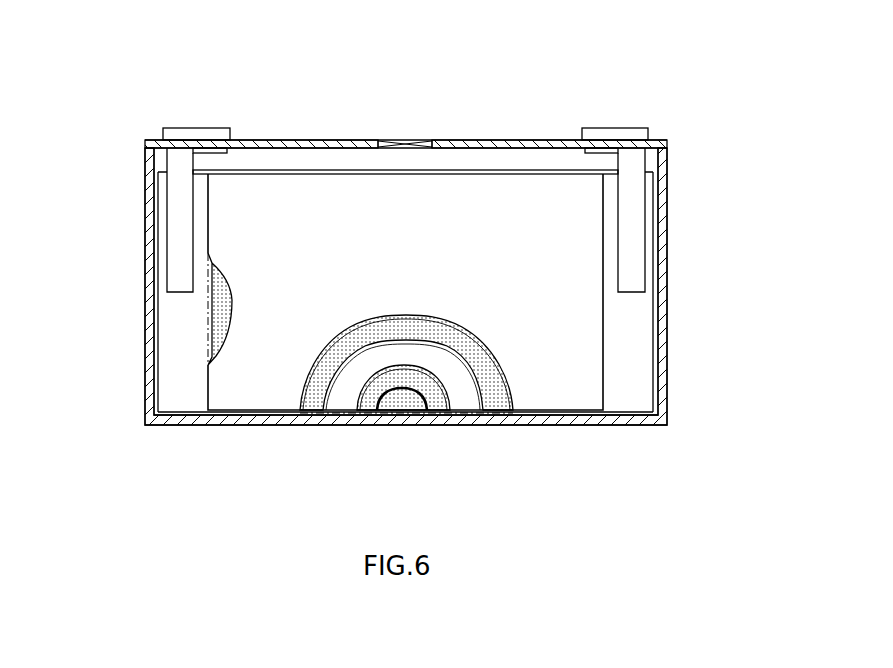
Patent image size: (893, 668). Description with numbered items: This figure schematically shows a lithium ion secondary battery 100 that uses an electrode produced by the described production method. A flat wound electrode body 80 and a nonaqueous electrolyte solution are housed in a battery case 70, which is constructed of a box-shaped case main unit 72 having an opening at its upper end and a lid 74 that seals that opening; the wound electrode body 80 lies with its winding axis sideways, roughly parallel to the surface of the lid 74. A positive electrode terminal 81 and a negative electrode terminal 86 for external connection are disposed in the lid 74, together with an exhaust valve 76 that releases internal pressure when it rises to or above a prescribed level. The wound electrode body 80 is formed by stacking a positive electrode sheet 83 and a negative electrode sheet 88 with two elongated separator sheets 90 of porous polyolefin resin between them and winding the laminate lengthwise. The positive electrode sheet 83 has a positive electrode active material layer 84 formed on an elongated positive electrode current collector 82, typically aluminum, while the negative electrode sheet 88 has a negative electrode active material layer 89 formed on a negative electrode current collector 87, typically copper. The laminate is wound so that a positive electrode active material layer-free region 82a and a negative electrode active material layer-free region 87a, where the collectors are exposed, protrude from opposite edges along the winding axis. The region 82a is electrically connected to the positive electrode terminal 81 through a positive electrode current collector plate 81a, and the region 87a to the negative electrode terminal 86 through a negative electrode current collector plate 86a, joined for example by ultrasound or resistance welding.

The lithium ion secondary battery 100 is at (683, 65).
The battery case 70 is at (668, 248).
The case main unit 72 is at (667, 158).
The lid 74 is at (495, 140).
The exhaust valve 76 is at (417, 140).
The wound electrode body 80 is at (330, 168).
The positive electrode terminal 81 is at (207, 128).
The positive electrode current collector plate 81a is at (178, 210).
The positive electrode current collector 82 is at (157, 315).
The positive electrode active material layer-free region 82a is at (170, 380).
The positive electrode sheet 83 is at (315, 403).
The positive electrode active material layer 84 is at (232, 287).
The negative electrode terminal 86 is at (627, 128).
The negative electrode current collector plate 86a is at (635, 205).
The negative electrode current collector 87 is at (653, 317).
The negative electrode active material layer-free region 87a is at (633, 378).
The negative electrode sheet 88 is at (377, 397).
The negative electrode active material layer 89 is at (392, 452).
The separator sheet 90 is at (250, 363).